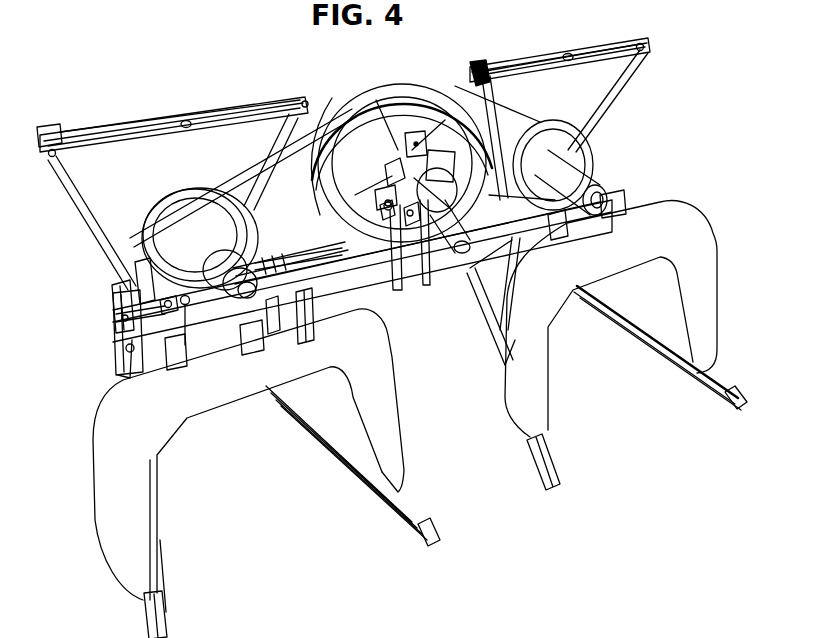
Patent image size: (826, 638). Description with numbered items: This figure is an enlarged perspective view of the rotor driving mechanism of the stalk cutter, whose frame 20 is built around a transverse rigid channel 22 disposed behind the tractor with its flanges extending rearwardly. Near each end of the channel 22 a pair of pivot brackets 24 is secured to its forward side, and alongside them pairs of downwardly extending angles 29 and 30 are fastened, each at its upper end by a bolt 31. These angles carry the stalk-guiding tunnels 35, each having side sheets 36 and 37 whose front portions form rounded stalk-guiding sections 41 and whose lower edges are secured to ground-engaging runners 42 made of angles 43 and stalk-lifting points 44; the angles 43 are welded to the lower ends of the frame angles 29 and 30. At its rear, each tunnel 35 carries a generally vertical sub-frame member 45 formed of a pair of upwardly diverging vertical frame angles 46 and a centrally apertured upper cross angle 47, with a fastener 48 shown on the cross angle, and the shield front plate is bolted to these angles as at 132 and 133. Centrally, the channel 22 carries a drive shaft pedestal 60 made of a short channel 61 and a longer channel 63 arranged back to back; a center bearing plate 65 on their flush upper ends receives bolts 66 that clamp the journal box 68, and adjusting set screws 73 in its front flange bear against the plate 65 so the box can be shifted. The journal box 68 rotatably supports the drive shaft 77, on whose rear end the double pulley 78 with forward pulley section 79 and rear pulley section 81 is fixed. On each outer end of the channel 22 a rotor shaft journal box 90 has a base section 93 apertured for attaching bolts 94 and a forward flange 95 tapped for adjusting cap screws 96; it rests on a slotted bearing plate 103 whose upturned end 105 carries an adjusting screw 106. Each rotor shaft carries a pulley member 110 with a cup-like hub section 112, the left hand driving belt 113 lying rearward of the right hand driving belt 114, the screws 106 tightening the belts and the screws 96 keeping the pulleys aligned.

The frame 20 is at (374, 302).
The channel 22 is at (318, 303).
The pivot brackets 24 is at (177, 354).
The angles 29 is at (127, 378).
The angles 30 is at (282, 312).
The bolt 31 is at (113, 350).
The stalk-guiding tunnel 35 is at (94, 515).
The side sheet 36 is at (503, 332).
The side sheet 37 is at (326, 425).
The rounded stalk-guiding sections 41 is at (163, 433).
The ground-engaging runners 42 is at (665, 368).
The angles 43 is at (277, 403).
The stalk-lifting points 44 is at (168, 634).
The sub-frame member 45 is at (118, 127).
The vertical frame angles 46 is at (87, 197).
The upper cross angle 47 is at (220, 117).
The bolt 48 is at (186, 121).
The drive shaft pedestal 60 is at (406, 288).
The short channel 61 is at (362, 270).
The longer channel 63 is at (424, 267).
The center bearing plate 65 is at (373, 213).
The bolts 66 is at (393, 179).
The journal box 68 is at (424, 156).
The adjusting set screws 73 is at (392, 256).
The drive shaft 77 is at (433, 183).
The double pulley 78 is at (420, 88).
The forward pulley section 79 is at (373, 112).
The rear pulley section 81 is at (320, 147).
The rotor shaft journal box 90 is at (213, 258).
The base section 93 is at (143, 262).
The attaching bolts 94 is at (267, 252).
The forward flange 95 is at (189, 304).
The adjusting cap screws 96 is at (182, 312).
The bearing plate 103 is at (120, 272).
The upturned end 105 is at (307, 295).
The adjusting screw 106 is at (292, 262).
The pulley member 110 is at (178, 194).
The hub section 112 is at (157, 206).
The left hand driving belt 113 is at (527, 88).
The right hand driving belt 114 is at (247, 170).
The bolts 132 is at (118, 316).
The bolts 133 is at (50, 160).